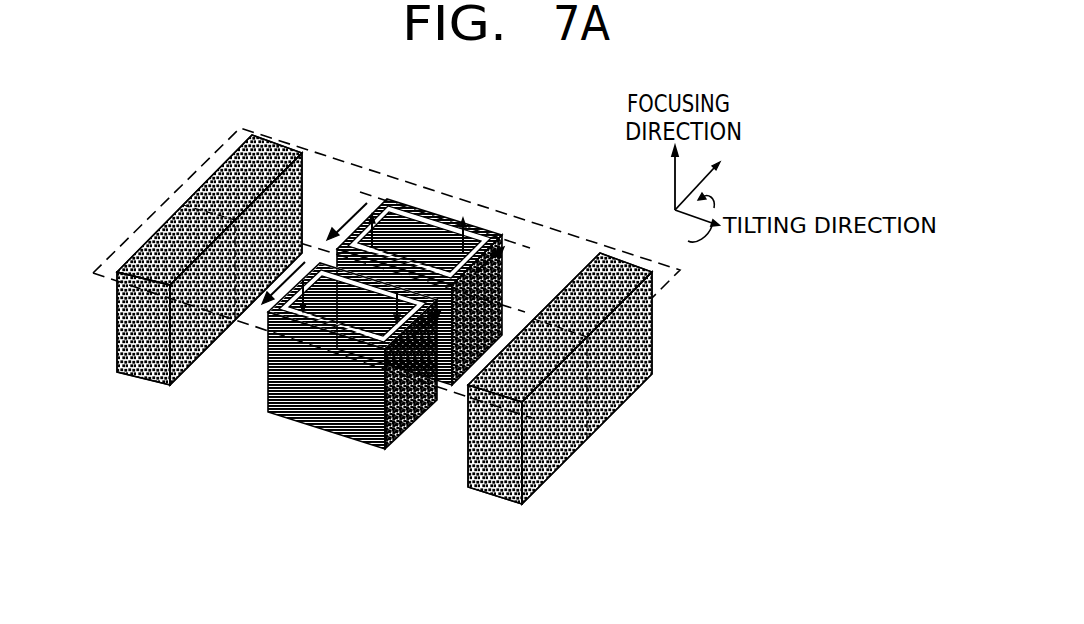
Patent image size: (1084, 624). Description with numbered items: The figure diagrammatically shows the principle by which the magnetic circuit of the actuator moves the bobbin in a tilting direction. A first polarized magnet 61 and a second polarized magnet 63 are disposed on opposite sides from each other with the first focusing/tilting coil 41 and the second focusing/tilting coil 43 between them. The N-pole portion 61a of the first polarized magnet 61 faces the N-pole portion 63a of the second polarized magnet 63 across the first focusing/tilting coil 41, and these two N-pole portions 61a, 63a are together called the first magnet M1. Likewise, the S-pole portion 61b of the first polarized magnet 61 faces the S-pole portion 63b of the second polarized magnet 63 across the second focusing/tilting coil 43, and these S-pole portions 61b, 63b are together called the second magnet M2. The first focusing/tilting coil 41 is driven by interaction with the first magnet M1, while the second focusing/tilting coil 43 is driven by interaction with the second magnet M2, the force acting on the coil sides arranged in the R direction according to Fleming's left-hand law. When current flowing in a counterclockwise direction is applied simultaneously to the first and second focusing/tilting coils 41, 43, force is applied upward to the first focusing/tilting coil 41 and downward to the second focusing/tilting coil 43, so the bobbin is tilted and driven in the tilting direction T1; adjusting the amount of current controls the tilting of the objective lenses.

The first focusing/tilting coil 41 is at (423, 220).
The second focusing/tilting coil 43 is at (310, 405).
The first polarized magnet 61 is at (575, 402).
The N-pole portion of the first polarized magnet 61a is at (612, 417).
The S-pole portion of the first polarized magnet 61b is at (550, 425).
The second polarized magnet 63 is at (185, 244).
The N-pole portion of the second polarized magnet 63a is at (215, 188).
The S-pole portion of the second polarized magnet 63b is at (161, 271).
The first magnet M1 is at (655, 300).
The second magnet M2 is at (627, 406).
The tilting direction T1 is at (715, 197).
The R direction R is at (705, 179).